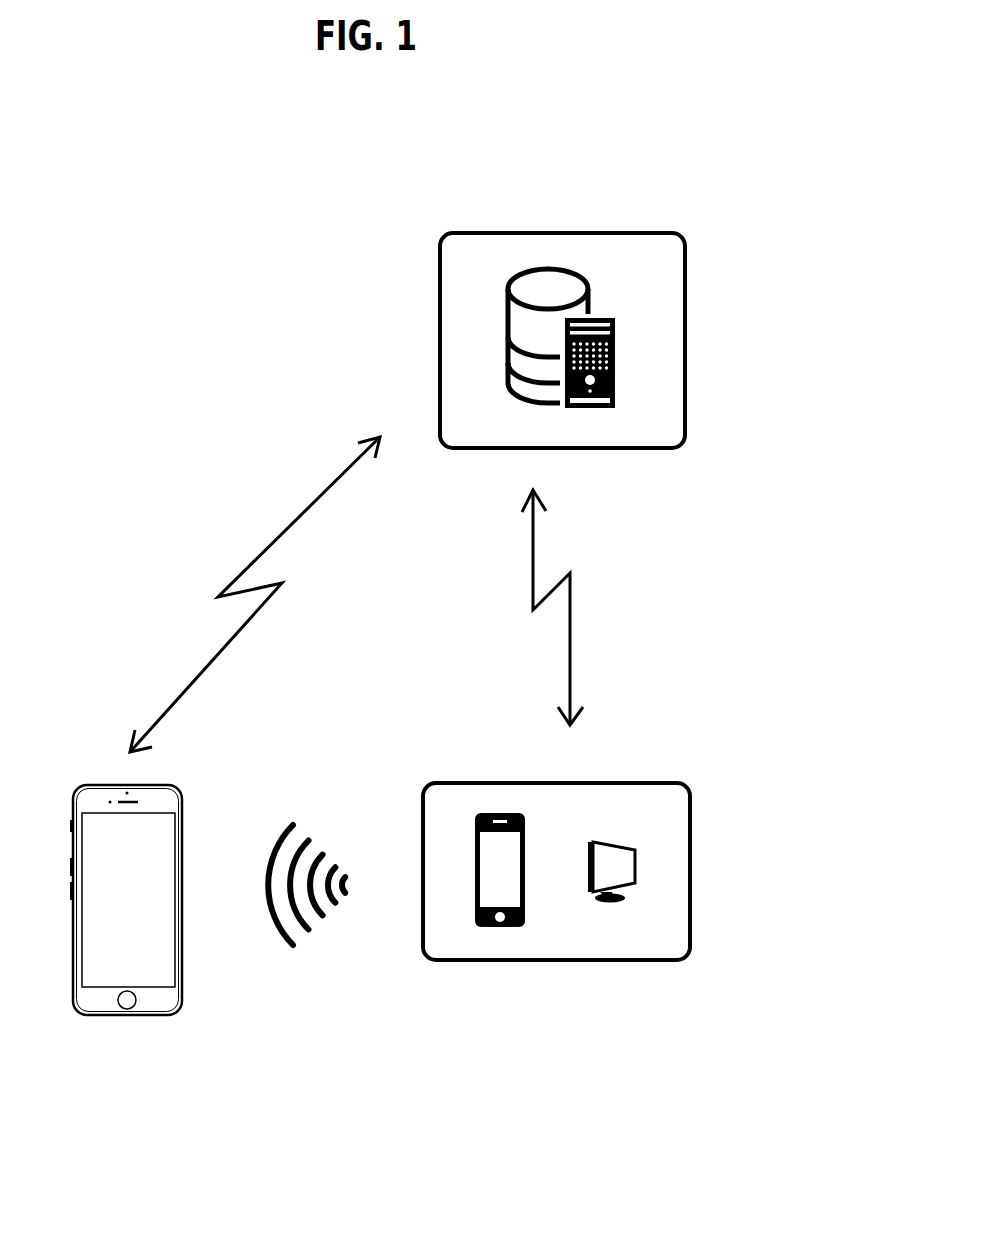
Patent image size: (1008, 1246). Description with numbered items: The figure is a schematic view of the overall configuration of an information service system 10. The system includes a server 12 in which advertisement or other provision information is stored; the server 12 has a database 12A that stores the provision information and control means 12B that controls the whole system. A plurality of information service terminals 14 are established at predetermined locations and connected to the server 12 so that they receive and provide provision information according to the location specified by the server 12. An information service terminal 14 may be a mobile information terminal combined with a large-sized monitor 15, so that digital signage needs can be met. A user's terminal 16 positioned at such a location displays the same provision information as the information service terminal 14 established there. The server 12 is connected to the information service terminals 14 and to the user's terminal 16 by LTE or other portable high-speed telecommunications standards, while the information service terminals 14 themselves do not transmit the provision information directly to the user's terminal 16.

The information service system 10 is at (160, 418).
The server 12 is at (437, 263).
The database 12A is at (547, 288).
The control means 12B is at (616, 382).
The information service terminal 14 is at (487, 928).
The monitor 15 is at (612, 900).
The user's terminal 16 is at (153, 1002).